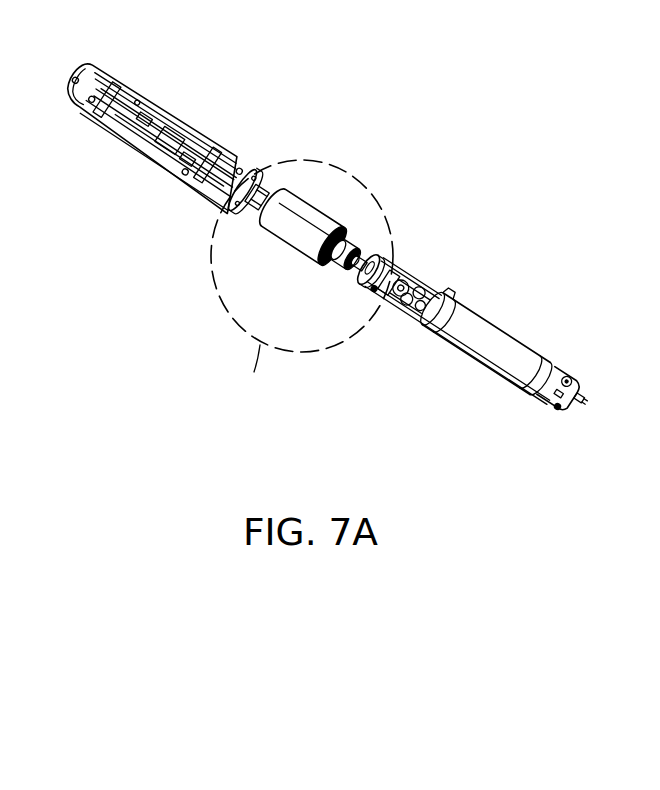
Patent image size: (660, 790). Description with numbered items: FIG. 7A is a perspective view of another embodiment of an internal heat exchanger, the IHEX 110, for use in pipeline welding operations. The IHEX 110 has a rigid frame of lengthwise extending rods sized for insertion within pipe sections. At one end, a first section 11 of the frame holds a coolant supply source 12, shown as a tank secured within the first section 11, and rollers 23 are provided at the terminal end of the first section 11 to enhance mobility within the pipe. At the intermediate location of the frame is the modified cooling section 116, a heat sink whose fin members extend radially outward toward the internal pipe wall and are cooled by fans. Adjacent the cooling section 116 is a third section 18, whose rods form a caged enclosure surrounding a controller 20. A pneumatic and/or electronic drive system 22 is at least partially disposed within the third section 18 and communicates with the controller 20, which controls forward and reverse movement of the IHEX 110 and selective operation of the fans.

The IHEX 110 is at (409, 156).
The third section 18 is at (146, 97).
The controller 20 is at (172, 147).
The drive system 22 is at (236, 152).
The cooling section 116 is at (298, 232).
The first section 11 is at (460, 351).
The coolant supply source 12 is at (497, 350).
The rollers 23 is at (557, 413).